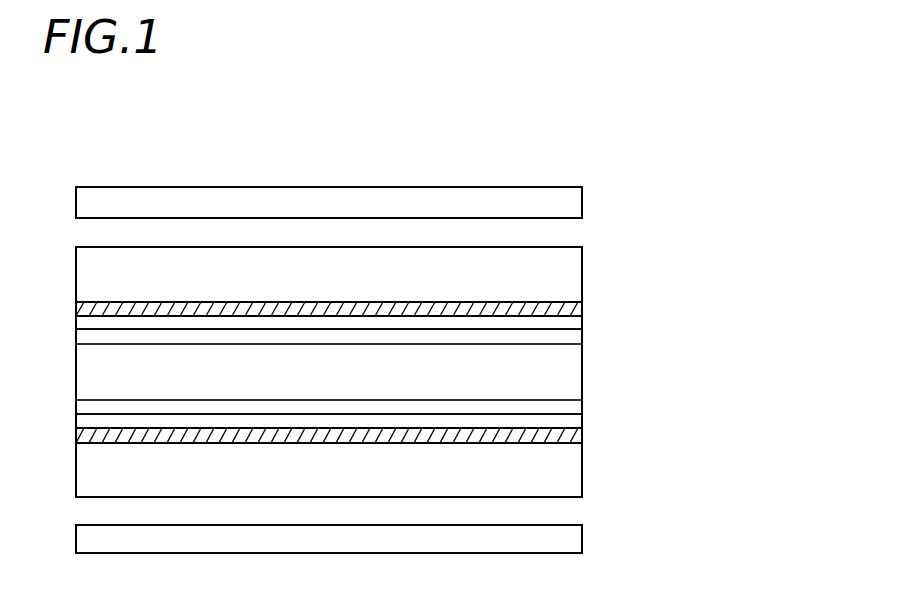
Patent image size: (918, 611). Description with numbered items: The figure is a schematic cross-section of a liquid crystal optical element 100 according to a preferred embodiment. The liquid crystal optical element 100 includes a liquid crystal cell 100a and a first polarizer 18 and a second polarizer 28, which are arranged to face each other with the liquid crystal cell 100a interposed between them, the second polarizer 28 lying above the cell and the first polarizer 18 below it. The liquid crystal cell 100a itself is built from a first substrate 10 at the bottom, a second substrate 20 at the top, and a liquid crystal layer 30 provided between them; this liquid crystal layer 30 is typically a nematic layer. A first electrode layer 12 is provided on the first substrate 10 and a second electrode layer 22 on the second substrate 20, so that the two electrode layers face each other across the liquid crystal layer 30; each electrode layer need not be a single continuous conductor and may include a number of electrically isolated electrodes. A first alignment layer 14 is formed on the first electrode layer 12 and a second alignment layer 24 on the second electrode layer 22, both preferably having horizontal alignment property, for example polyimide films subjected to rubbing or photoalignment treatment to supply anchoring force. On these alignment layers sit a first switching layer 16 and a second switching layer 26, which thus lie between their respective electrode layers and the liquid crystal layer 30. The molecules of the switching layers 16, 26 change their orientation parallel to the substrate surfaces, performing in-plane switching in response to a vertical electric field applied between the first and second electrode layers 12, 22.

The liquid crystal optical element 100 is at (572, 158).
The liquid crystal cell 100a is at (718, 203).
The second polarizer 28 is at (572, 202).
The second substrate 20 is at (576, 258).
The second electrode layer 22 is at (576, 307).
The second alignment layer 24 is at (576, 322).
The second switching layer 26 is at (576, 335).
The liquid crystal layer 30 is at (576, 372).
The first switching layer 16 is at (576, 403).
The first alignment layer 14 is at (576, 418).
The first electrode layer 12 is at (576, 432).
The first substrate 10 is at (576, 468).
The first polarizer 18 is at (576, 538).